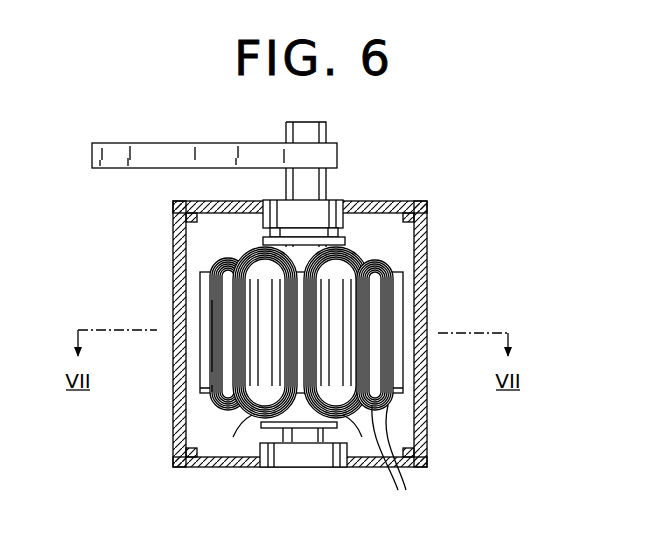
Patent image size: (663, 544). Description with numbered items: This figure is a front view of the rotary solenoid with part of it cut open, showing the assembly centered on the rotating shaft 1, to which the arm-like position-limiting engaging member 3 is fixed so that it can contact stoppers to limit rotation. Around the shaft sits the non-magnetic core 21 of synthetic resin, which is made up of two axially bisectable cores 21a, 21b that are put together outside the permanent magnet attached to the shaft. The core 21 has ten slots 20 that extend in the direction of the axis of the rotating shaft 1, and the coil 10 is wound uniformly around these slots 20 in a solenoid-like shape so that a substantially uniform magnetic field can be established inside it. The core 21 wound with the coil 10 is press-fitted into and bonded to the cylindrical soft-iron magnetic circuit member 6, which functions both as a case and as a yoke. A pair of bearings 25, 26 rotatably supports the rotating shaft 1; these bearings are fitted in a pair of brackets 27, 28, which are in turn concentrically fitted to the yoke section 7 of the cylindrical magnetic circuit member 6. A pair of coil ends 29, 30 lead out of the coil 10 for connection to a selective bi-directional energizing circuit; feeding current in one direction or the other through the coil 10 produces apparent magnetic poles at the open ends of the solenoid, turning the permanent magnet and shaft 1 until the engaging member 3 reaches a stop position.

The rotating shaft 1 is at (327, 132).
The engaging member 3 is at (145, 153).
The magnetic circuit member 6 is at (326, 332).
The yoke section 7 is at (426, 266).
The coil 10 is at (205, 357).
The slots 20 is at (402, 459).
The non-magnetic core 21 is at (196, 274).
The core 21a is at (207, 299).
The core 21b is at (206, 394).
The bearing 25 is at (333, 208).
The bearing 26 is at (320, 463).
The bracket 27 is at (385, 207).
The bracket 28 is at (207, 468).
The coil end 29 is at (240, 428).
The coil end 30 is at (353, 458).